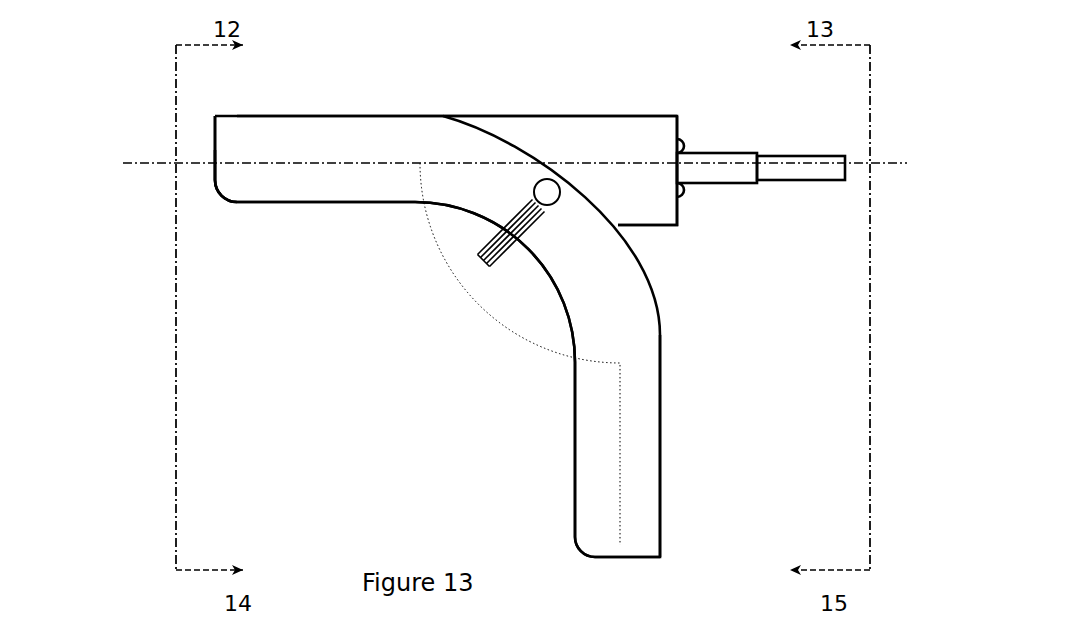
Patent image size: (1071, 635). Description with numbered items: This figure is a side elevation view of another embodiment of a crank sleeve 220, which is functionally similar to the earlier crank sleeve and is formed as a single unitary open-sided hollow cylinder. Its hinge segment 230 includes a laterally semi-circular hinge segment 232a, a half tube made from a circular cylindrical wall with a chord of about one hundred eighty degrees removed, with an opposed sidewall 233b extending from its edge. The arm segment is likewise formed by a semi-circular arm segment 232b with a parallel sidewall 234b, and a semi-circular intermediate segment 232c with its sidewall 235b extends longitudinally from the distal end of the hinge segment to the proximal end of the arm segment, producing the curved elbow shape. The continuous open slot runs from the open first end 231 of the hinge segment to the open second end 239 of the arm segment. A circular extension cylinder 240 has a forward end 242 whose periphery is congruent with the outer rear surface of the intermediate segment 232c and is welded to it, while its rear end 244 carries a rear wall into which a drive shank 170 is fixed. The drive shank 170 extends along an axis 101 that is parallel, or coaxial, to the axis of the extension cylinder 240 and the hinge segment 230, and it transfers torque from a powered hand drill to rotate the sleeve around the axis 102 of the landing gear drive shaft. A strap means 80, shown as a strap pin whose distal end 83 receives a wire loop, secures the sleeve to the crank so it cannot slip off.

The strap means 80 is at (517, 262).
The distal end 83 is at (547, 192).
The axis 101 is at (893, 170).
The axis 102 is at (162, 162).
The drive shank 170 is at (774, 156).
The crank sleeve 220 is at (203, 111).
The hinge segment 230 is at (403, 90).
The open first end 231 is at (232, 183).
The semi-circular hinge segment 232a is at (377, 147).
The semi-circular arm segment 232b is at (638, 418).
The semi-circular intermediate segment 232c is at (600, 230).
The sidewall 233b is at (318, 182).
The sidewall 234b is at (590, 483).
The sidewall 235b is at (570, 262).
The open second end 239 is at (603, 548).
The extension cylinder 240 is at (644, 200).
The forward end 242 is at (518, 138).
The rear end 244 is at (679, 113).